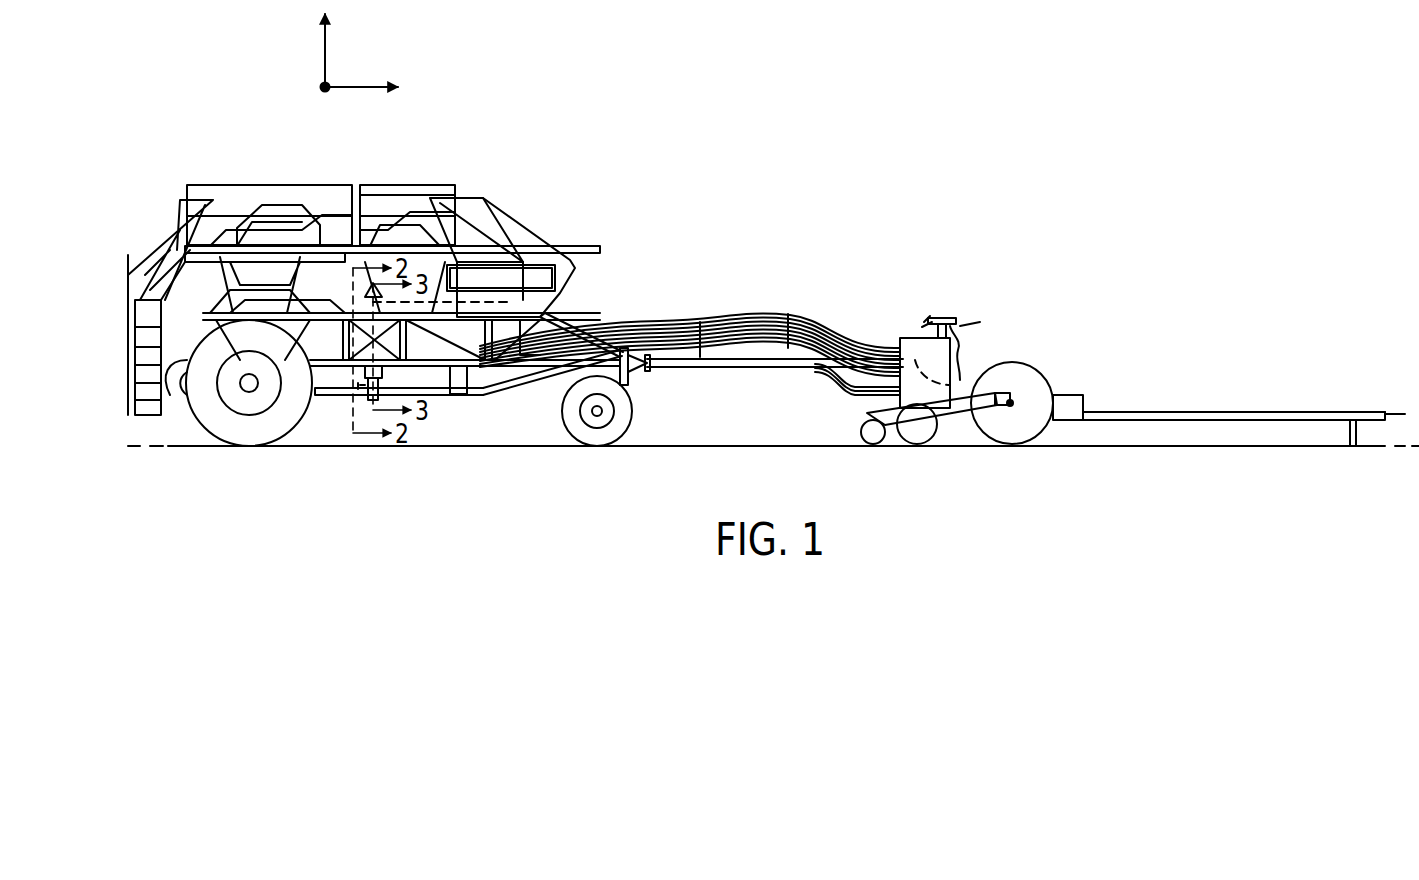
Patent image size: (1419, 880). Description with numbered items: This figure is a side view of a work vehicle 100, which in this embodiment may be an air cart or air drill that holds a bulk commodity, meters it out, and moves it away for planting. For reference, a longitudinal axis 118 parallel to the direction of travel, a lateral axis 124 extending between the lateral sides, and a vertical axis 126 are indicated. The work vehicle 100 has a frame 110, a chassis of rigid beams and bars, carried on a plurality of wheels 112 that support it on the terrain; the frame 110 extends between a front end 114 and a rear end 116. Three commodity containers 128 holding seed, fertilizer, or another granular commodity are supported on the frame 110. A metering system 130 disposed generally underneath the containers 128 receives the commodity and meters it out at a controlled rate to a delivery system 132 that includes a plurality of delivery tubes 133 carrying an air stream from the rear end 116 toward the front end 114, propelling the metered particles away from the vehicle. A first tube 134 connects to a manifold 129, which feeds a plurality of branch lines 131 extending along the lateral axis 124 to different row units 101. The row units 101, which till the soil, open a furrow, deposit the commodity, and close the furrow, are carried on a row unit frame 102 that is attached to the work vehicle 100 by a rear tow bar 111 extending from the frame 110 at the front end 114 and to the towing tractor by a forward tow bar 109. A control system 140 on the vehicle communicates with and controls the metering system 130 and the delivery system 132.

The work vehicle 100 is at (236, 155).
The row unit 101 is at (1062, 353).
The row unit frame 102 is at (1049, 360).
The forward tow bar 109 is at (1180, 412).
The frame 110 is at (553, 320).
The rear tow bar 111 is at (757, 368).
The wheels 112 is at (258, 435).
The front end 114 is at (628, 352).
The rear end 116 is at (133, 320).
The longitudinal axis 118 is at (357, 88).
The lateral axis 124 is at (322, 84).
The vertical axis 126 is at (327, 55).
The commodity containers 128 is at (280, 225).
The manifold 129 is at (940, 300).
The metering system 130 is at (392, 378).
The branch lines 131 is at (922, 327).
The delivery system 132 is at (499, 398).
The delivery tubes 133 is at (535, 377).
The first tube 134 is at (826, 386).
The control system 140 is at (557, 278).